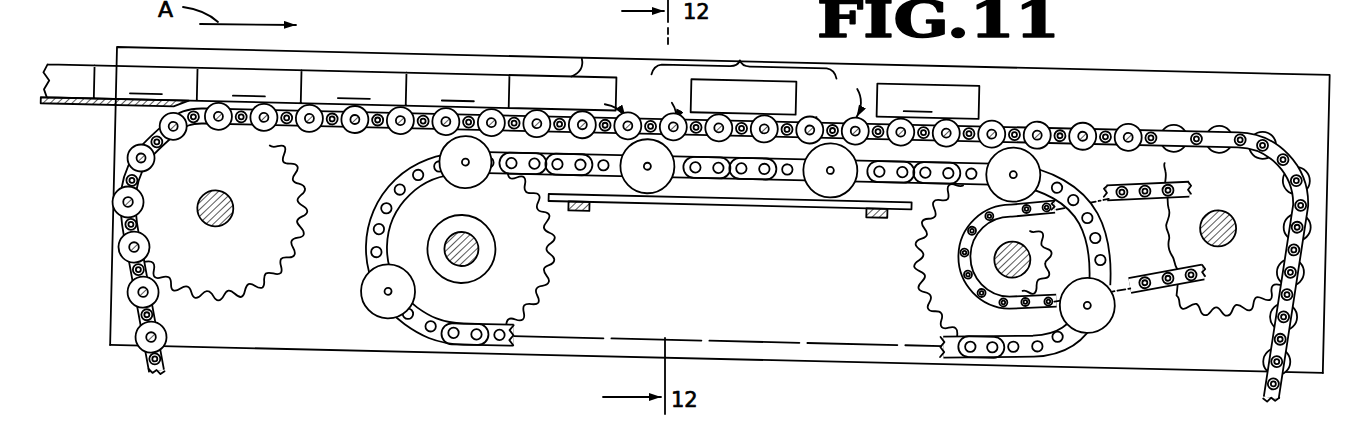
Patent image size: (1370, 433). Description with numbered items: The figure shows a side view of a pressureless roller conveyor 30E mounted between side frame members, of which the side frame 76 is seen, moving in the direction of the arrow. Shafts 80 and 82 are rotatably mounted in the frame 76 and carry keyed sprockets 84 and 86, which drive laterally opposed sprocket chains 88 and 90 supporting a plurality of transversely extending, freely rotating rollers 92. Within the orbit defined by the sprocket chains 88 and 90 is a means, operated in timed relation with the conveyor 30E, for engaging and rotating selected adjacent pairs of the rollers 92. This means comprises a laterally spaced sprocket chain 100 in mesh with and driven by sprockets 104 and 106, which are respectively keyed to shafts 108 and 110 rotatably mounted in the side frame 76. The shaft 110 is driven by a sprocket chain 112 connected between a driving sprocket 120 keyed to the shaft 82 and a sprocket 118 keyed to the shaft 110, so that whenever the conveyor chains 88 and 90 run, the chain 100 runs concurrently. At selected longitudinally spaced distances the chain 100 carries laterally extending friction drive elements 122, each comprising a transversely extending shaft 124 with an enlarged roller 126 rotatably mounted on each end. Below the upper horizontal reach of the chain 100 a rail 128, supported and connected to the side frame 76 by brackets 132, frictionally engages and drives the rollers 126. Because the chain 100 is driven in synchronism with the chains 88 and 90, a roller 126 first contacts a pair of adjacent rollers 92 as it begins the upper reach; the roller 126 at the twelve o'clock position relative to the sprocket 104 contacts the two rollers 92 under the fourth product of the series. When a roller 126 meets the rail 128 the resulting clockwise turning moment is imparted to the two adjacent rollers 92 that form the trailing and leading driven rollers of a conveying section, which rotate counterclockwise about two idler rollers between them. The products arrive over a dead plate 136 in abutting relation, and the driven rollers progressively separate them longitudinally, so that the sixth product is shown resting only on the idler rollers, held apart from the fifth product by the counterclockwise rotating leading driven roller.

The conveyor 30E is at (1225, 80).
The side frame member 76 is at (303, 345).
The shaft 80 is at (219, 222).
The shaft 82 is at (1228, 218).
The sprocket 84 is at (223, 235).
The sprocket 86 is at (1257, 217).
The sprocket chain 88 is at (1064, 108).
The sprocket chain 90 is at (1246, 112).
The roller 92 is at (118, 198).
The sprocket chain 100 is at (378, 184).
The sprocket 104 is at (510, 252).
The sprocket 106 is at (935, 264).
The shaft 108 is at (466, 258).
The shaft 110 is at (1017, 258).
The sprocket chain 112 is at (1160, 268).
The sprocket 118 is at (1097, 215).
The driving sprocket 120 is at (1182, 186).
The friction drive element 122 is at (1050, 342).
The shaft 124 is at (390, 285).
The roller 126 is at (470, 179).
The rail 128 is at (698, 193).
The bracket 132 is at (585, 202).
The dead plate 136 is at (100, 104).